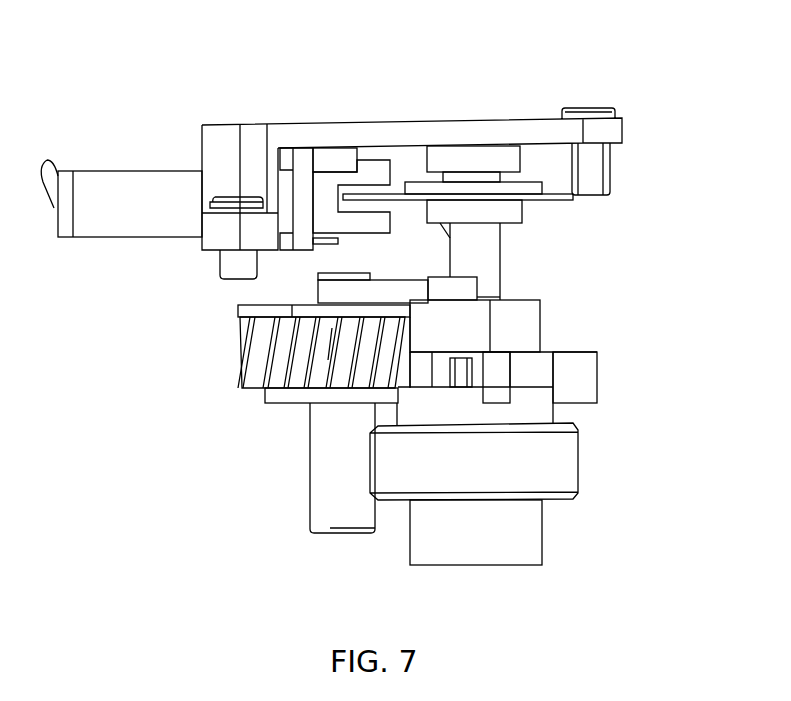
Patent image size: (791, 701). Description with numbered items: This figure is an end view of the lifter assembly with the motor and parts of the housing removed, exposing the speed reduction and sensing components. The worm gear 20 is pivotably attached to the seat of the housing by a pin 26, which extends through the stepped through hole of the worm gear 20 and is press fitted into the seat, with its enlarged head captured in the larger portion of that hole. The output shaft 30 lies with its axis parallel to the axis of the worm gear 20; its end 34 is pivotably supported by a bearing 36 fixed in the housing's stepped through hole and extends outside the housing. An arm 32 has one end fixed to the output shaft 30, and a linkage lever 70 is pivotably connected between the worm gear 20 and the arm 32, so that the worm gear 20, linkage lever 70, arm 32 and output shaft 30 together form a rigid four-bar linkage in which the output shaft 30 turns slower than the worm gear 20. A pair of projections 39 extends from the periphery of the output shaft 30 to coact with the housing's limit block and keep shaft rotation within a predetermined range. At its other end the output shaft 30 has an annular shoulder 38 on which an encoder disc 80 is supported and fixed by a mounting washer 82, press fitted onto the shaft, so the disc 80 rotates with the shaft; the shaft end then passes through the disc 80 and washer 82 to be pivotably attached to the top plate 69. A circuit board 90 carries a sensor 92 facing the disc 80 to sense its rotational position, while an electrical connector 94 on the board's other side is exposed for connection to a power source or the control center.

The worm gear 20 is at (255, 347).
The pin 26 is at (327, 457).
The output shaft 30 is at (500, 268).
The arm 32 is at (522, 332).
The end 34 is at (522, 535).
The bearing 36 is at (562, 465).
The annular shoulder 38 is at (507, 208).
The projections 39 is at (497, 378).
The top plate 69 is at (477, 130).
The linkage lever 70 is at (340, 292).
The encoder disc 80 is at (553, 197).
The mounting washer 82 is at (528, 190).
The circuit board 90 is at (302, 163).
The sensor 92 is at (372, 172).
The electrical connector 94 is at (152, 188).